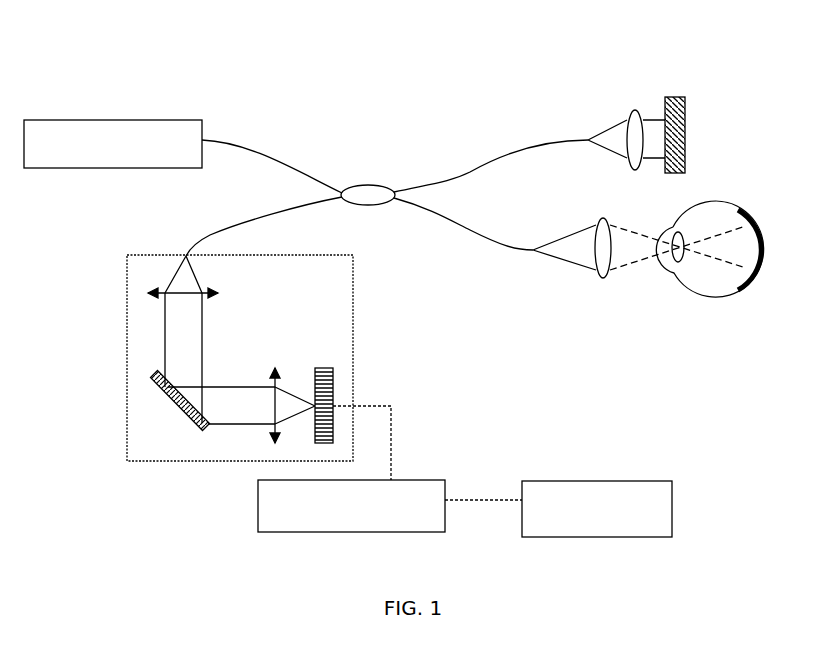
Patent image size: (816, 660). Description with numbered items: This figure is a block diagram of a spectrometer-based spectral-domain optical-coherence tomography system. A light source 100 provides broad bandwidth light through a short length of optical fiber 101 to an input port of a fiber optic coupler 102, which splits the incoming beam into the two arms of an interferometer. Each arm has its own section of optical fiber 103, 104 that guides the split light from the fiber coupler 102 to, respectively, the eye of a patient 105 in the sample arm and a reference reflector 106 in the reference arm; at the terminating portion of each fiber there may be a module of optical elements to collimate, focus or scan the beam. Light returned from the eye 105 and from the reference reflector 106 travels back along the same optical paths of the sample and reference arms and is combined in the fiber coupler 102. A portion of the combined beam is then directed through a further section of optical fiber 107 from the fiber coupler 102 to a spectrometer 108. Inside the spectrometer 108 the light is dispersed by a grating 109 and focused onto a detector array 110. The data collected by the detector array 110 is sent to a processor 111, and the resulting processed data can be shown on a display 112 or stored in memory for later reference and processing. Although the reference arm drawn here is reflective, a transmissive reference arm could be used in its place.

The light source 100 is at (110, 117).
The optical fiber 101 is at (265, 143).
The fiber optic coupler 102 is at (365, 175).
The optical fiber 103 is at (475, 252).
The optical fiber 104 is at (495, 152).
The eye of a patient 105 is at (723, 312).
The reference reflector 106 is at (672, 88).
The optical fiber 107 is at (222, 219).
The spectrometer 108 is at (127, 337).
The grating 109 is at (163, 403).
The detector array 110 is at (313, 367).
The processor 111 is at (358, 537).
The display 112 is at (598, 480).